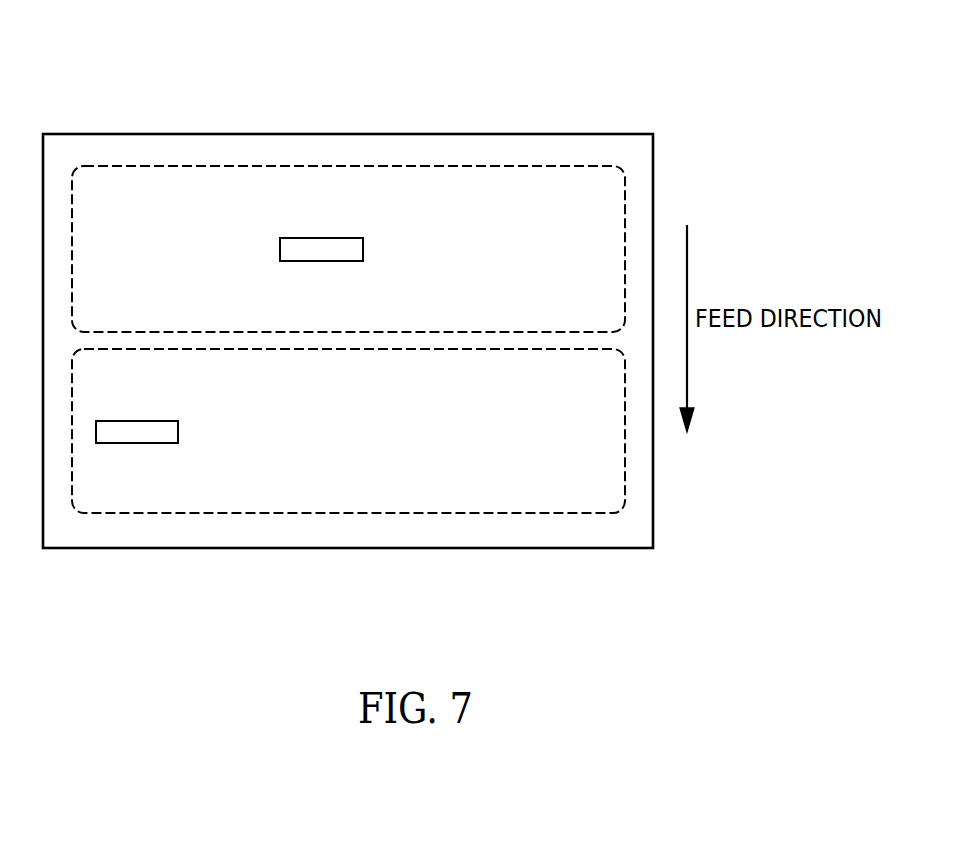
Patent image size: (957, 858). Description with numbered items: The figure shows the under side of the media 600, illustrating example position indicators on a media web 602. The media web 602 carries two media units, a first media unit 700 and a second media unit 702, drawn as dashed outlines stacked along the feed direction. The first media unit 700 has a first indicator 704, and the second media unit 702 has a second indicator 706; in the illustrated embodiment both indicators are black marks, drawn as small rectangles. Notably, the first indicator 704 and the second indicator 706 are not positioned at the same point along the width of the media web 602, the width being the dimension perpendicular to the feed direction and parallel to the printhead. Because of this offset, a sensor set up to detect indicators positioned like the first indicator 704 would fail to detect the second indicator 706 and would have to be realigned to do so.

The media 600 is at (130, 48).
The media web 602 is at (343, 530).
The first media unit 700 is at (557, 497).
The second media unit 702 is at (557, 186).
The first indicator 704 is at (178, 432).
The second indicator 706 is at (288, 249).